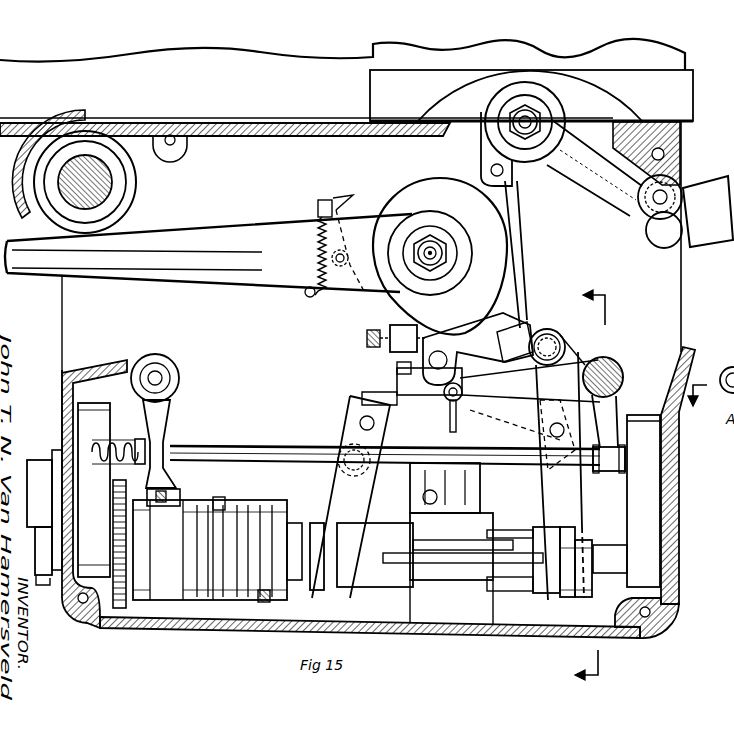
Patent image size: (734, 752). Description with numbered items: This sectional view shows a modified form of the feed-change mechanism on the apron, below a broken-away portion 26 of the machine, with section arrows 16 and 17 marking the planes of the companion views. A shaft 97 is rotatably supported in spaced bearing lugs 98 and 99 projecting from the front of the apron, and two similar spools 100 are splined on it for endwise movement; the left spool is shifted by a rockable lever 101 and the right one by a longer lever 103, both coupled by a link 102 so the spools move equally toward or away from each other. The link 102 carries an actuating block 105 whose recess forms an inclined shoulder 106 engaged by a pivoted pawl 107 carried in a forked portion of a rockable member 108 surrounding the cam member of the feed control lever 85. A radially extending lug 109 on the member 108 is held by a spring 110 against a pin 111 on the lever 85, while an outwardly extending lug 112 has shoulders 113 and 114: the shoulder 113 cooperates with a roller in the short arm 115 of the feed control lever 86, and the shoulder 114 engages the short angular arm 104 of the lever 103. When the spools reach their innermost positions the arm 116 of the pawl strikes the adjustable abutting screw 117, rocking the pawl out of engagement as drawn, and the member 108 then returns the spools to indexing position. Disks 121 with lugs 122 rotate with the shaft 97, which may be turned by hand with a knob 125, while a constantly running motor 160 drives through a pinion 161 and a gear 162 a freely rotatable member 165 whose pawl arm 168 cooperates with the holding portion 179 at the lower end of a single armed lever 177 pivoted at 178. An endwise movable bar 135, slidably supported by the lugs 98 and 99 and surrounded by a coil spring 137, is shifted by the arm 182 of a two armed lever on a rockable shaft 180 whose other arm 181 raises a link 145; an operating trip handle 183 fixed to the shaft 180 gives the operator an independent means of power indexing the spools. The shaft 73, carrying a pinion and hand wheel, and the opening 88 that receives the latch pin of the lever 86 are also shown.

The housing wall 26 is at (268, 62).
The shaft 73 is at (108, 186).
The feed control lever 85 is at (184, 236).
The feed control lever 86 is at (700, 190).
The opening 88 is at (640, 200).
The shaft 97 is at (463, 567).
The bearing lug 98 is at (668, 518).
The bearing lug 99 is at (94, 490).
The spool 100 is at (360, 568).
The rockable lever 101 is at (330, 490).
The link 102 is at (397, 384).
The lever 103 is at (572, 500).
The arm 104 is at (552, 336).
The actuating block 105 is at (362, 398).
The inclined shoulder 106 is at (452, 380).
The pivoted pawl 107 is at (397, 368).
The rockable member 108 is at (392, 304).
The lug 109 is at (353, 196).
The spring 110 is at (318, 216).
The pin 111 is at (346, 254).
The lug 112 is at (514, 268).
The shoulder 113 is at (518, 190).
The shoulder 114 is at (520, 327).
The short arm 115 is at (482, 145).
The arm 116 is at (440, 300).
The adjustable abutting screw 117 is at (367, 338).
The disk 121 is at (240, 602).
The lug 122 is at (220, 498).
The knob 125 is at (44, 585).
The bar 135 is at (270, 448).
The coil spring 137 is at (125, 440).
The link 145 is at (446, 415).
The motor 160 is at (36, 460).
The pinion 161 is at (120, 470).
The gear 162 is at (113, 608).
The member 165 is at (172, 602).
The arm 168 is at (158, 506).
The single armed lever 177 is at (160, 415).
The pivot 178 is at (157, 378).
The holding portion 179 is at (176, 490).
The pivot 180 is at (612, 368).
The arm 181 is at (482, 400).
The arm 182 is at (612, 394).
The operating trip handle 183 is at (733, 366).
The section line 16 is at (576, 485).
The section line 17 is at (702, 400).